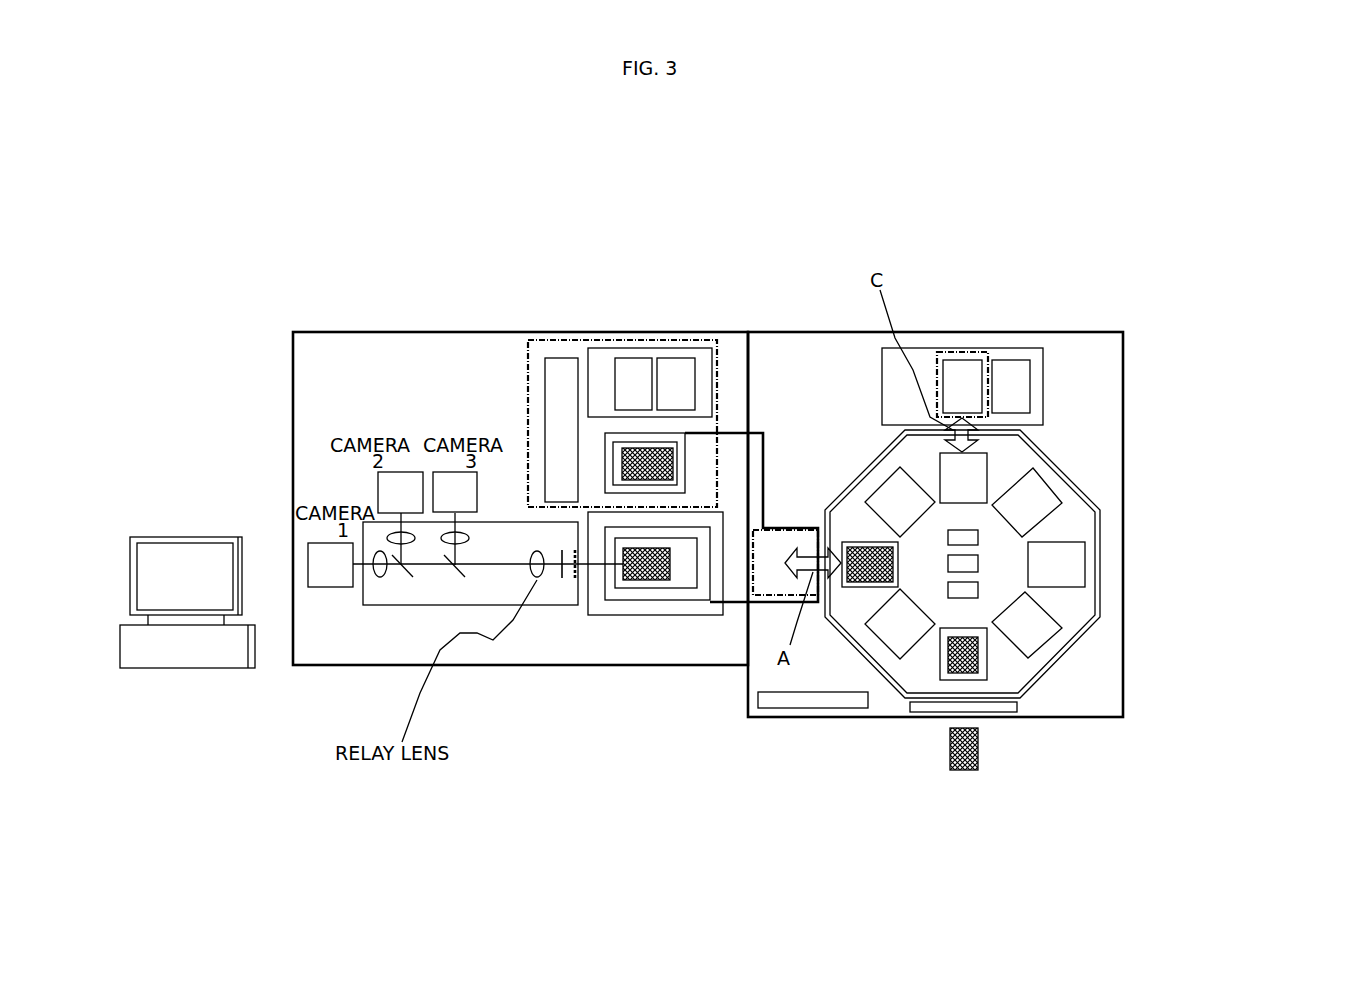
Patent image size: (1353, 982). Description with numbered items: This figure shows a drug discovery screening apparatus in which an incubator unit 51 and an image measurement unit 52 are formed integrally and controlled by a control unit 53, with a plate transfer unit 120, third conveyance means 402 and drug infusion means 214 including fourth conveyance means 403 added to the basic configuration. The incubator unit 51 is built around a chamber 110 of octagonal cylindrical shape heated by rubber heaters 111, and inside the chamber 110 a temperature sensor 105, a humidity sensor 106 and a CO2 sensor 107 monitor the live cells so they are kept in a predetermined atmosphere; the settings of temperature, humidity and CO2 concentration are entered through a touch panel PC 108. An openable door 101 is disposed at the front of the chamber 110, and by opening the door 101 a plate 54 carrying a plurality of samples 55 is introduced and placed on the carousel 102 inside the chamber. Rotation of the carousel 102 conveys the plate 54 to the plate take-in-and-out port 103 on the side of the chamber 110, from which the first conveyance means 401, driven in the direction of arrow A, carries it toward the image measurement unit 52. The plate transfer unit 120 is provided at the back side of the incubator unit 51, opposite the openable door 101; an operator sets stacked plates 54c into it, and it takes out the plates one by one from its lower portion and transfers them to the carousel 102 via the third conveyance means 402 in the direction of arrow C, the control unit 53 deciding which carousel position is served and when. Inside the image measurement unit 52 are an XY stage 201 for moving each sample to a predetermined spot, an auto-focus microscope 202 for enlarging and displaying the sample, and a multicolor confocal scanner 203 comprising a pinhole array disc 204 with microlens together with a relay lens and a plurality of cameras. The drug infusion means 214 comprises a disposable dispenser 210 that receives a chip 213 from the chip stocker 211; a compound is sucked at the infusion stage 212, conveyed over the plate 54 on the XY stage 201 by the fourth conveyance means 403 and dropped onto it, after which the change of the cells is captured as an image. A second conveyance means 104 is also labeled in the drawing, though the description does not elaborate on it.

The incubator unit 51 is at (1098, 332).
The image measurement unit 52 is at (293, 408).
The control unit 53 is at (233, 538).
The plate 54 is at (620, 457).
The stacked plates 54c is at (1002, 363).
The sample 55 is at (980, 753).
The openable door 101 is at (990, 708).
The carousel 102 is at (1043, 640).
The plate take-in-and-out port 103 is at (818, 527).
The second conveyance means 104 is at (663, 585).
The temperature sensor 105 is at (978, 537).
The humidity sensor 106 is at (978, 562).
The CO2 sensor 107 is at (978, 588).
The touch panel PC 108 is at (797, 708).
The chamber 110 is at (1045, 432).
The rubber heater 111 is at (1017, 462).
The plate transfer unit 120 is at (978, 348).
The XY stage 201 is at (622, 615).
The auto-focus microscope 202 is at (648, 600).
The multicolor confocal scanner 203 is at (413, 607).
The pinhole array disc with microlens 204 is at (575, 552).
The dispenser 210 is at (562, 358).
The chip stocker 211 is at (692, 348).
The infusion stage 212 is at (530, 340).
The chip 213 is at (633, 357).
The drug infusion means 214 is at (612, 433).
The first conveyance means 401 is at (742, 597).
The third conveyance means 402 is at (955, 352).
The fourth conveyance means 403 is at (732, 433).